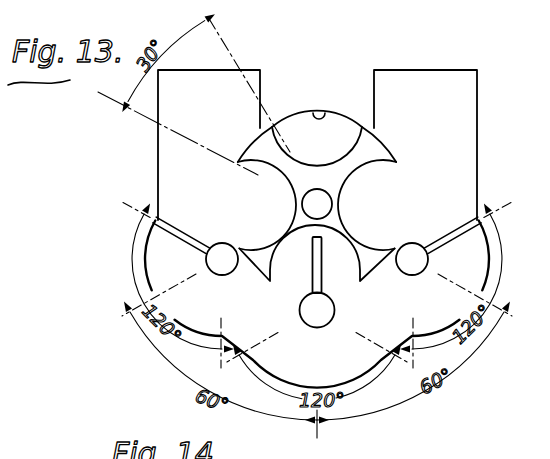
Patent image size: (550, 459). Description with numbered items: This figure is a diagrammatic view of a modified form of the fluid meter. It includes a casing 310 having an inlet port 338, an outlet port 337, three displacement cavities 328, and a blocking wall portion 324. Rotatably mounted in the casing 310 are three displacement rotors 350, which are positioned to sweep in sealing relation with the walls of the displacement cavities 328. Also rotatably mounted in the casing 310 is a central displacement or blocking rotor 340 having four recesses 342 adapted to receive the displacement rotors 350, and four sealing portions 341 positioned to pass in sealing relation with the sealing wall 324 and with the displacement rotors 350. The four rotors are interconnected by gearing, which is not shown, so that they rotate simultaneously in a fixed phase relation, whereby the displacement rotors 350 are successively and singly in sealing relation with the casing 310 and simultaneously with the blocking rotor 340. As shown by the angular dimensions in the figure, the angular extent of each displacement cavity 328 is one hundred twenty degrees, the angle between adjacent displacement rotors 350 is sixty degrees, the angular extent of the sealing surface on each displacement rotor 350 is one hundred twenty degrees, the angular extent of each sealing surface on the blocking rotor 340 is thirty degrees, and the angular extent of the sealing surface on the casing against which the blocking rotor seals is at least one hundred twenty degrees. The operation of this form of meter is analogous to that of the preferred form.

The casing 310 is at (271, 378).
The blocking wall portion 324 is at (323, 114).
The displacement cavities 328 is at (150, 274).
The outlet port 337 is at (470, 110).
The inlet port 338 is at (160, 136).
The displacement rotor 340 is at (399, 152).
The sealing portions 341 is at (362, 272).
The recesses 342 is at (300, 182).
The displacement rotors 350 is at (178, 236).